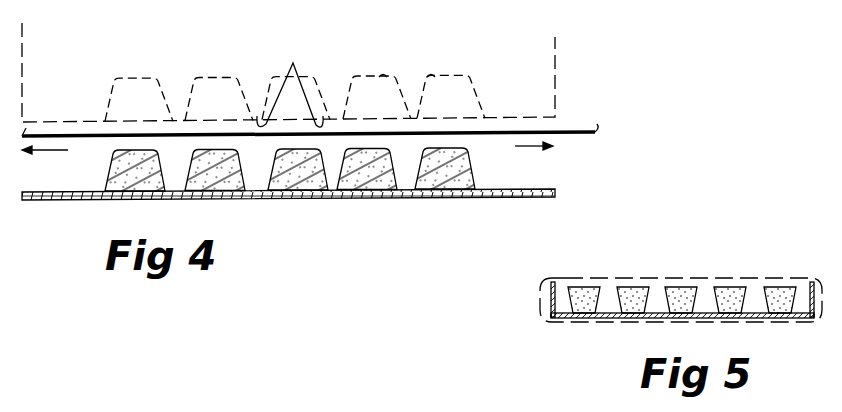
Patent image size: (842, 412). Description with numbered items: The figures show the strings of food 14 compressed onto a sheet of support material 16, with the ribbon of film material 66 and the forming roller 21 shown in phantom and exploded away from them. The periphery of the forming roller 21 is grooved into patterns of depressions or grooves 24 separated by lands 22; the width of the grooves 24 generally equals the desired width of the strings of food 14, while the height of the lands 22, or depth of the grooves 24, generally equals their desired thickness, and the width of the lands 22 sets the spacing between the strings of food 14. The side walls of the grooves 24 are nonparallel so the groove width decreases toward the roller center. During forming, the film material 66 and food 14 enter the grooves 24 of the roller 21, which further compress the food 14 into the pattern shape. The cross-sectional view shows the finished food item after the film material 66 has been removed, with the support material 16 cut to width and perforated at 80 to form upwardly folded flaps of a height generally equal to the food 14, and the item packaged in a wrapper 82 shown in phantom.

In FIG. 4, the strings of food 14 is at (110, 163).
In FIG. 5, the strings of food 14 is at (632, 287).
In FIG. 4, the support material 16 is at (557, 191).
In FIG. 5, the support material 16 is at (549, 292).
In FIG. 4, the forming roller 21 is at (555, 52).
In FIG. 4, the lands 22 is at (290, 85).
In FIG. 4, the grooves 24 is at (430, 76).
In FIG. 4, the film material 66 is at (580, 132).
In FIG. 5, the perforations 80 is at (551, 318).
In FIG. 5, the wrapper 82 is at (706, 278).